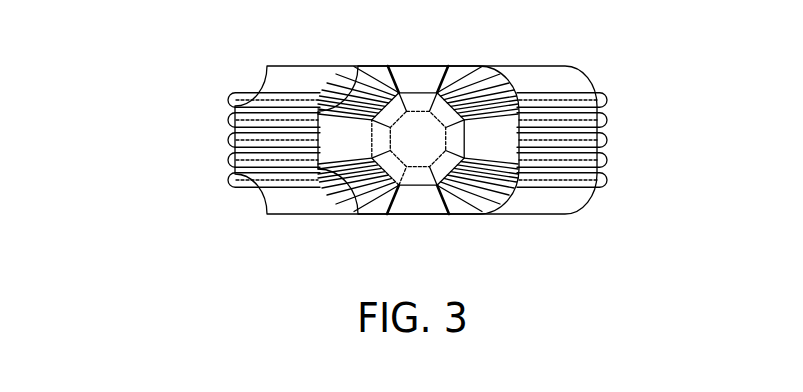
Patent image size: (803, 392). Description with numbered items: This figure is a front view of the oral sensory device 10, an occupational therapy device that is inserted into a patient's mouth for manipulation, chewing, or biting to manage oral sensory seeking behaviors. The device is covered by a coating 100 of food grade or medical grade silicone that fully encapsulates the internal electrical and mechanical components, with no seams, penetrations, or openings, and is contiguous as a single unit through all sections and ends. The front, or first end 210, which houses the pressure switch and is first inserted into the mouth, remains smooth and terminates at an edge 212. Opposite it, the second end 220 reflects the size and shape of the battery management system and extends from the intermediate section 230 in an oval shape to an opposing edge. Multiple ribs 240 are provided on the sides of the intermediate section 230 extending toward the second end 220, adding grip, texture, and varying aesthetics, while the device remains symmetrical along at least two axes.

The oral sensory device 10 is at (139, 46).
The coating 100 is at (556, 84).
The second end 220 is at (280, 66).
The intermediate section 230 is at (222, 150).
The ribs 240 is at (603, 115).
The first end 210 is at (417, 143).
The edge 212 is at (431, 124).